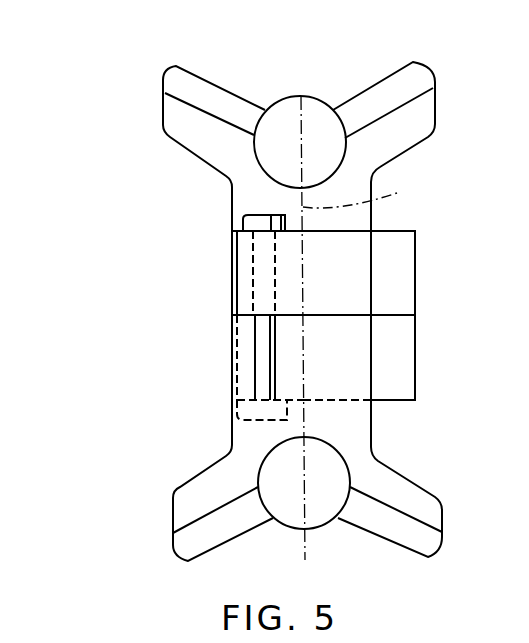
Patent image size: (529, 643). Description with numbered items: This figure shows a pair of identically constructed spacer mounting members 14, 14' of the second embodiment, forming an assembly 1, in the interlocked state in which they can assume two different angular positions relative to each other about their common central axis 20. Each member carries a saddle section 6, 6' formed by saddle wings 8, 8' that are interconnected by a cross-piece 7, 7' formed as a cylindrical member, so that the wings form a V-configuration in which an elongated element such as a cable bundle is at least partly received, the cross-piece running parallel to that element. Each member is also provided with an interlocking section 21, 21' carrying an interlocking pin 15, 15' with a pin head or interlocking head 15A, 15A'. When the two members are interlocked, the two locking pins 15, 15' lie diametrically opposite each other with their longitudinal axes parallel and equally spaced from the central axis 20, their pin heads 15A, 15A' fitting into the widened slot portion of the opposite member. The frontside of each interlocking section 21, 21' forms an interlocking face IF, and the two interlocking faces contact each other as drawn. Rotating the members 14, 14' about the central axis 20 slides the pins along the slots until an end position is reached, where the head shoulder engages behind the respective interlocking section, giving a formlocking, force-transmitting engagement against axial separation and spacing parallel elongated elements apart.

The connecting element / bone anchor assembly 1 is at (98, 68).
The saddle section 6 is at (173, 133).
The saddle section 6' is at (201, 503).
The cross-piece 7 is at (300, 109).
The cross-piece 7' is at (304, 510).
The saddle wings 8 is at (214, 60).
The saddle wings 8' is at (390, 551).
The spacer mounting member 14 is at (193, 201).
The spacer mounting member 14' is at (198, 433).
The interlocking pin 15 is at (306, 273).
The interlocking pin 15' is at (208, 357).
The pin head 15A is at (224, 409).
The pin head 15A' is at (203, 225).
The central axis 20 is at (367, 195).
The interlocking section 21 is at (200, 315).
The interlocking section 21' is at (393, 328).
The interlocking face IF is at (393, 313).